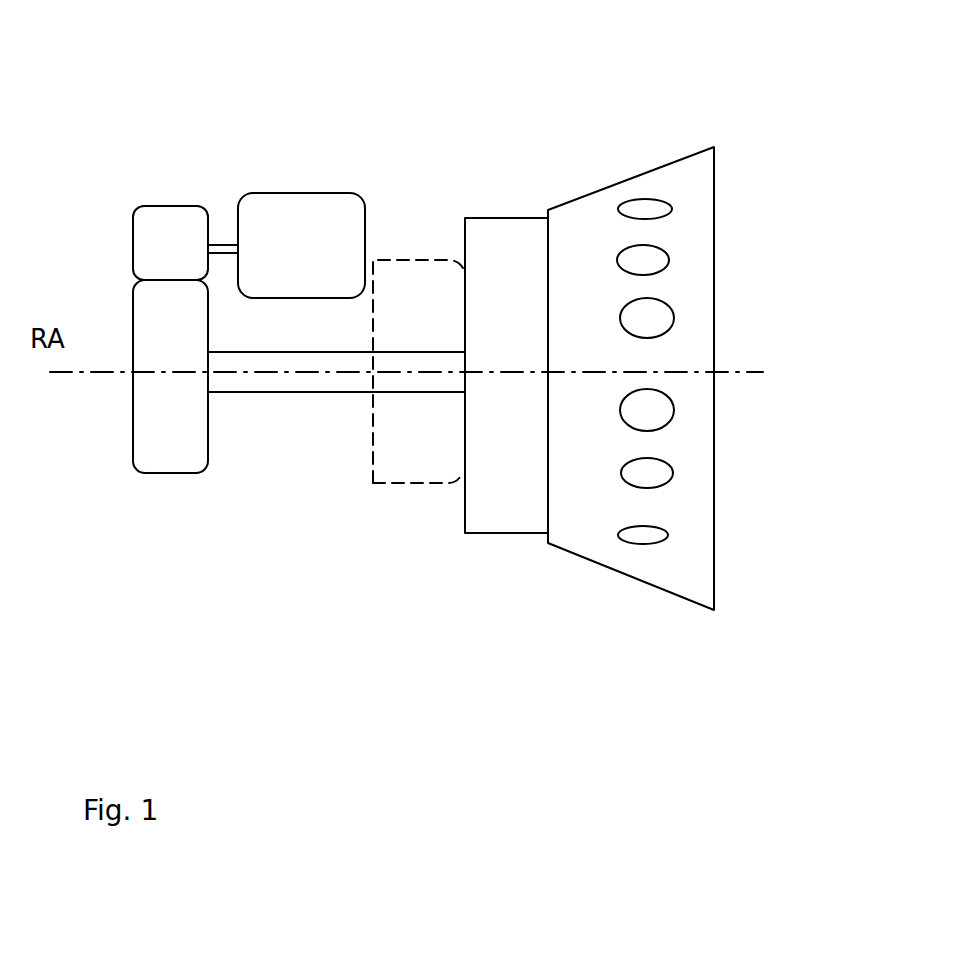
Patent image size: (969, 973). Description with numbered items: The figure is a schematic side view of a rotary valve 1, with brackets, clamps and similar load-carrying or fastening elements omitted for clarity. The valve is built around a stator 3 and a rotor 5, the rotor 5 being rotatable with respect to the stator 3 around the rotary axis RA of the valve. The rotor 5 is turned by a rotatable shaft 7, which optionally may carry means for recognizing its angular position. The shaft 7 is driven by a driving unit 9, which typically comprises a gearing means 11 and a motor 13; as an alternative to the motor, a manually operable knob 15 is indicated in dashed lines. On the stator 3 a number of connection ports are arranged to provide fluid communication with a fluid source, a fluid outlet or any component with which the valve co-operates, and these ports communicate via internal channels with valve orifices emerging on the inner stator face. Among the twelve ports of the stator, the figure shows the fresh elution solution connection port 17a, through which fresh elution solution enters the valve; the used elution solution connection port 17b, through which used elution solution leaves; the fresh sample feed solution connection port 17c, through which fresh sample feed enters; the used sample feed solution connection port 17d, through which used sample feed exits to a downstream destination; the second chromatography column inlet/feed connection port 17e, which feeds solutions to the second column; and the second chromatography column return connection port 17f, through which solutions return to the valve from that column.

The rotary valve 1 is at (424, 125).
The stator 3 is at (597, 190).
The rotor 5 is at (527, 212).
The rotatable shaft 7 is at (410, 348).
The driving unit 9 is at (113, 476).
The gearing means 11 is at (188, 474).
The motor 13 is at (237, 225).
The manually operable knob 15 is at (378, 485).
The fresh elution solution connection port 17a is at (664, 543).
The used elution solution connection port 17b is at (627, 488).
The fresh sample feed solution connection port 17c is at (626, 427).
The used sample feed solution connection port 17d is at (673, 312).
The second chromatography column inlet/feed connection port 17e is at (669, 258).
The second chromatography column return connection port 17f is at (653, 198).